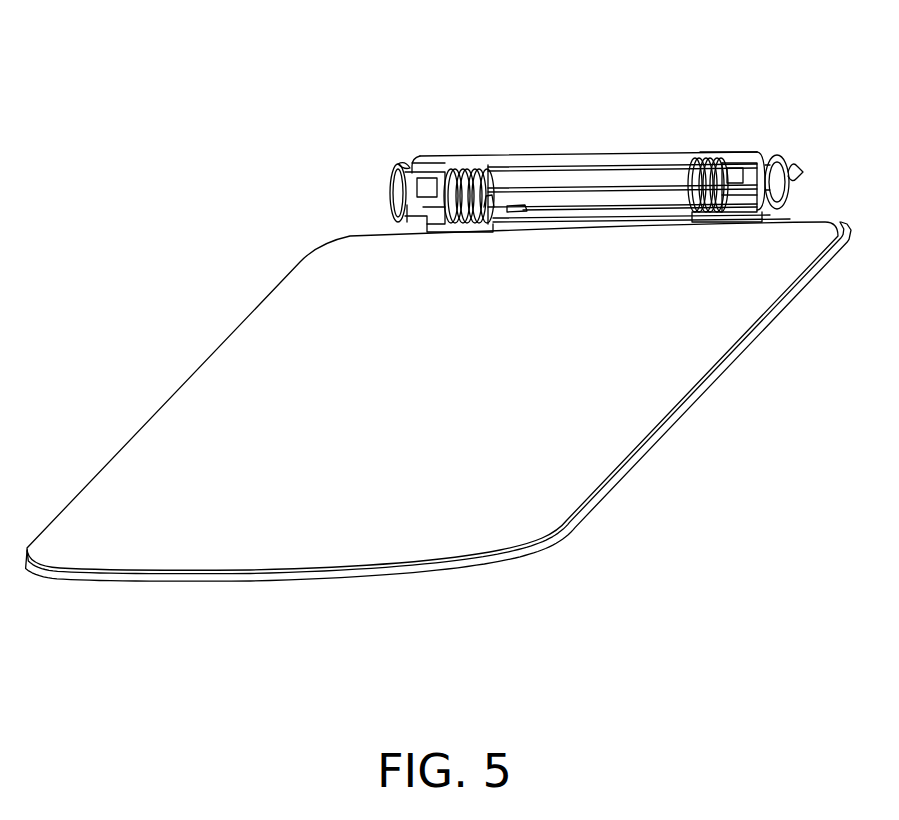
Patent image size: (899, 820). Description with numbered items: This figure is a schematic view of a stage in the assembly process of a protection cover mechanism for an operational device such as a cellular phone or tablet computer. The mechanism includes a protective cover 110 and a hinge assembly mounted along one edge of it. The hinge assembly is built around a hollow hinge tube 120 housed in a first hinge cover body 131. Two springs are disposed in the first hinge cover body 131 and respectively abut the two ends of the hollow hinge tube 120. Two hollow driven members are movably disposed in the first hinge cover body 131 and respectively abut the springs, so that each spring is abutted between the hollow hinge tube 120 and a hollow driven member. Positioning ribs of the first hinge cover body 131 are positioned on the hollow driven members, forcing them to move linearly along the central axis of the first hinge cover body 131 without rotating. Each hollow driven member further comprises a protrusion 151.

The protective cover 110 is at (598, 438).
The hollow hinge tube 120 is at (613, 172).
The first hinge cover body 131 is at (742, 148).
The protrusion 151 is at (803, 170).